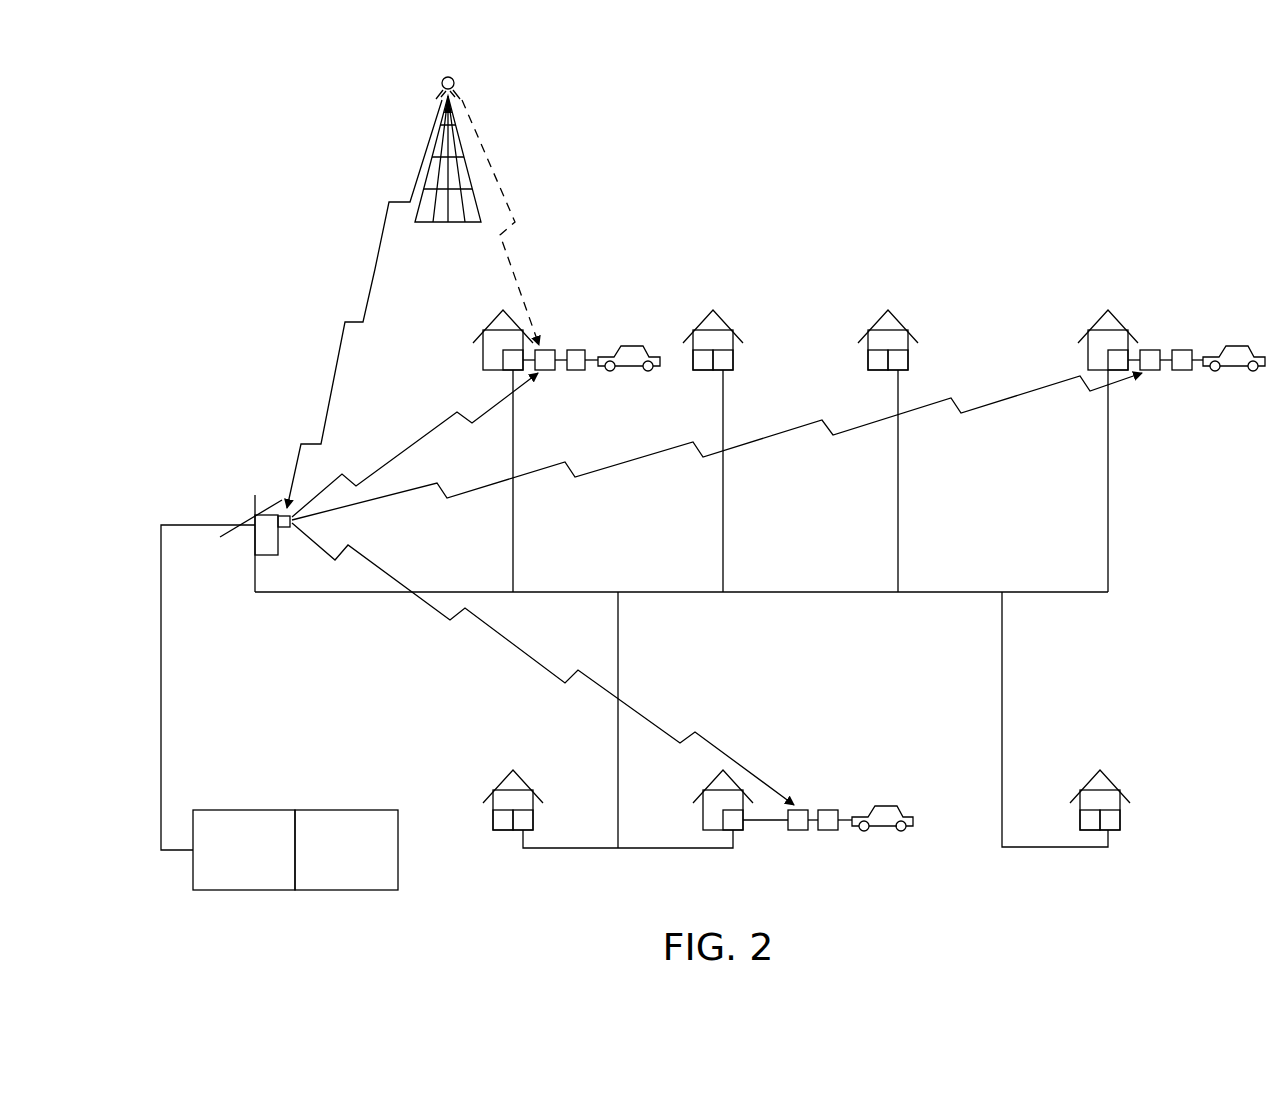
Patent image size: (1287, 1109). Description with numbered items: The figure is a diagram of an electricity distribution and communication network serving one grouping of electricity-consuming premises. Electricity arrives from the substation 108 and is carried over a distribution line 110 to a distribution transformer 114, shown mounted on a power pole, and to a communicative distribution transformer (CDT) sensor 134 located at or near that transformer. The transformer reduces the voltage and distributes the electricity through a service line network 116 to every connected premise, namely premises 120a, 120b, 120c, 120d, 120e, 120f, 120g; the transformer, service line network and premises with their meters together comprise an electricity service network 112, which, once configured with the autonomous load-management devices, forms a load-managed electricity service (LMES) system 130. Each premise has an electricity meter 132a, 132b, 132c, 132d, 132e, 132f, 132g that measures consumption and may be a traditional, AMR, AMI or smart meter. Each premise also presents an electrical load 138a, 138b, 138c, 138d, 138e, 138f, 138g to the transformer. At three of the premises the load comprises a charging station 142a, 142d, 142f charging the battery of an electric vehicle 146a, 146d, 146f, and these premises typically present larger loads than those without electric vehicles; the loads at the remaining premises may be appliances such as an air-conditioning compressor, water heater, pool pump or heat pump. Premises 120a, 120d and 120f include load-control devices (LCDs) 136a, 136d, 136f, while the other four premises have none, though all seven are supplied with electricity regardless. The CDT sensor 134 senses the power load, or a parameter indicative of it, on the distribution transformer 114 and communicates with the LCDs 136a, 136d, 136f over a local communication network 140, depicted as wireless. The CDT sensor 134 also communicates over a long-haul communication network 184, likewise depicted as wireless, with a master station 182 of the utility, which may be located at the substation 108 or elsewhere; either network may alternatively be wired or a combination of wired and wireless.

The long-haul communication network 184 is at (375, 266).
The load-managed electricity service (LMES) system 130 is at (853, 202).
The electricity service network 112 is at (238, 513).
The communicative distribution transformer (CDT) sensor 134 is at (257, 533).
The distribution transformer 114 is at (268, 547).
The distribution line 110 is at (161, 712).
The substation 108 is at (268, 810).
The master station 182 is at (376, 810).
The service line network 116 is at (1098, 593).
The local communication network 140 is at (413, 446).
The premise 120a is at (486, 334).
The premise 120b is at (728, 322).
The premise 120c is at (903, 322).
The premise 120d is at (1110, 312).
The premise 120e is at (500, 785).
The premise 120f is at (710, 785).
The premise 120g is at (1110, 768).
The electricity meter 132a is at (510, 350).
The electricity meter 132b is at (725, 358).
The electricity meter 132c is at (900, 358).
The electricity meter 132d is at (1120, 360).
The electricity meter 132e is at (525, 815).
The electricity meter 132f is at (738, 832).
The electricity meter 132g is at (1125, 815).
The electrical load 138a is at (562, 372).
The electrical load 138b is at (703, 350).
The electrical load 138c is at (878, 350).
The electrical load 138d is at (1162, 372).
The electrical load 138e is at (495, 815).
The electrical load 138f is at (812, 832).
The electrical load 138g is at (1082, 815).
The load-control device (LCD) 136a is at (546, 350).
The load-control device (LCD) 136d is at (1150, 350).
The load-control device (LCD) 136f is at (797, 810).
The charging station 142a is at (577, 350).
The charging station 142d is at (1180, 350).
The charging station 142f is at (828, 810).
The electric vehicle 146a is at (624, 372).
The electric vehicle 146d is at (1229, 372).
The electric vehicle 146f is at (875, 830).